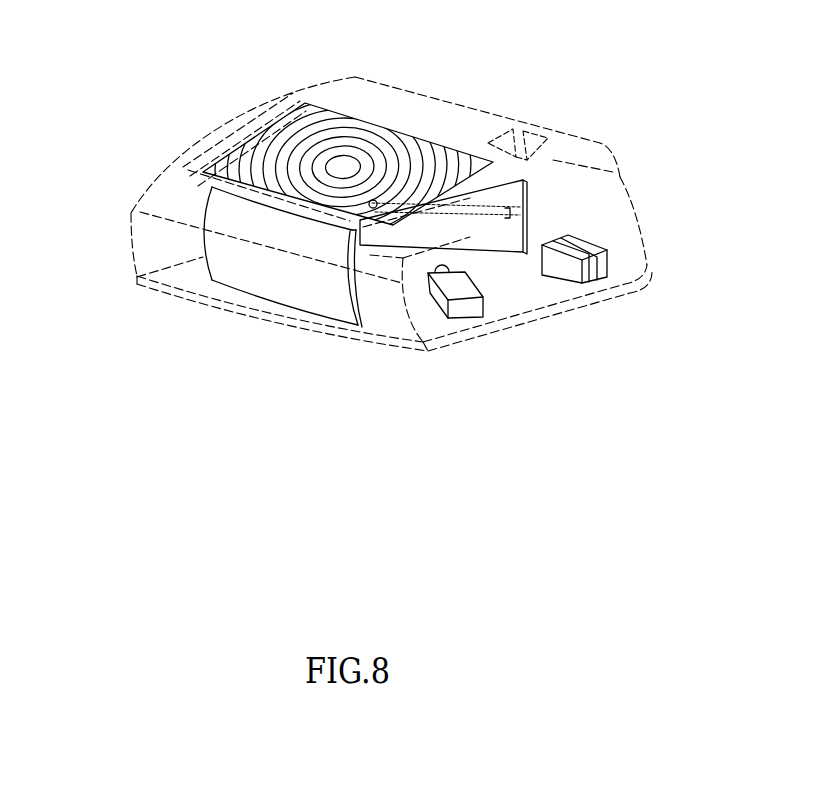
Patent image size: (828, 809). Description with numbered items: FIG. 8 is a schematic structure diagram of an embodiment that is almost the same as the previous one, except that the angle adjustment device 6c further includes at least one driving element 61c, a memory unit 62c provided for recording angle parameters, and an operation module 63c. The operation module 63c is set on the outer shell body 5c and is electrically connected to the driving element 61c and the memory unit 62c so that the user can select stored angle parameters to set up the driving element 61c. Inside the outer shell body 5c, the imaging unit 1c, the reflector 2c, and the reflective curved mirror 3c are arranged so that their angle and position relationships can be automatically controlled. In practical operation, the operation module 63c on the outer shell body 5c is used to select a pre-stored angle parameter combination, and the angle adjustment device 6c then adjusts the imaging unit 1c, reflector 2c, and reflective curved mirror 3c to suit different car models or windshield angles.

The outer shell body 5c is at (392, 88).
The reflective curved mirror 3c is at (203, 240).
The reflector 2c is at (412, 247).
The imaging unit 1c is at (460, 318).
The angle adjustment device 6c is at (537, 308).
The driving element 61c is at (502, 215).
The memory unit 62c is at (607, 260).
The operation module 63c is at (528, 145).